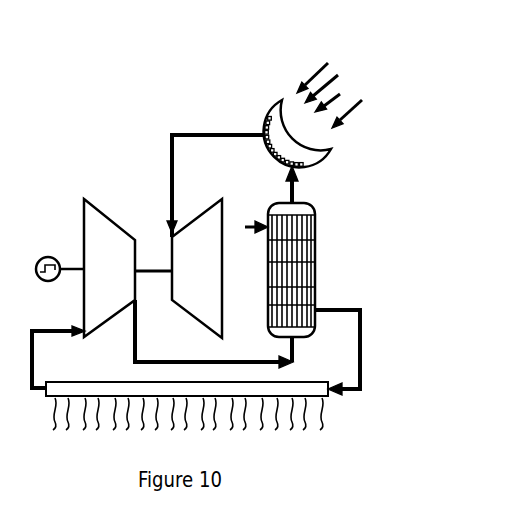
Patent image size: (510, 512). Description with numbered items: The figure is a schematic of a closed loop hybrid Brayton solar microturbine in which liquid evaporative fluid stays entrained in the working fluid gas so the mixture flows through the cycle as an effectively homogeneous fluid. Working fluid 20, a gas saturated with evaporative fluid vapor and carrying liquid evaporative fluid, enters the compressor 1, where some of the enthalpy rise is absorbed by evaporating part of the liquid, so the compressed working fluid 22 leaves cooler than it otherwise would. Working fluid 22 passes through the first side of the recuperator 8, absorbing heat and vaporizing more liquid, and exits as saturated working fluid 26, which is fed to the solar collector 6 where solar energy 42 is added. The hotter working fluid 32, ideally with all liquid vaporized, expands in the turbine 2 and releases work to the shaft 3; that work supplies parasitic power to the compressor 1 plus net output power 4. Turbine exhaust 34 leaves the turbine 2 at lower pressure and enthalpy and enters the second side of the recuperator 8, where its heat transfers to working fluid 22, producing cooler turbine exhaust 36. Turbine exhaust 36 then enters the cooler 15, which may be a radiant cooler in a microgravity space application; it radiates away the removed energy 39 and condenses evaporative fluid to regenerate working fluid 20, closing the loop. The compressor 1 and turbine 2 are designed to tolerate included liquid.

The compressor 1 is at (109, 268).
The turbine 2 is at (197, 268).
The shaft 3 is at (153, 271).
The net output power 4 is at (38, 252).
The solar collector 6 is at (297, 133).
The recuperator 8 is at (291, 270).
The cooler 15 is at (187, 385).
The working fluid 20 is at (50, 357).
The working fluid 22 is at (211, 334).
The working fluid 26 is at (290, 188).
The working fluid 32 is at (213, 186).
The turbine exhaust 34 is at (245, 227).
The turbine exhaust 36 is at (337, 344).
The radiated energy 39 is at (188, 424).
The solar energy 42 is at (329, 95).